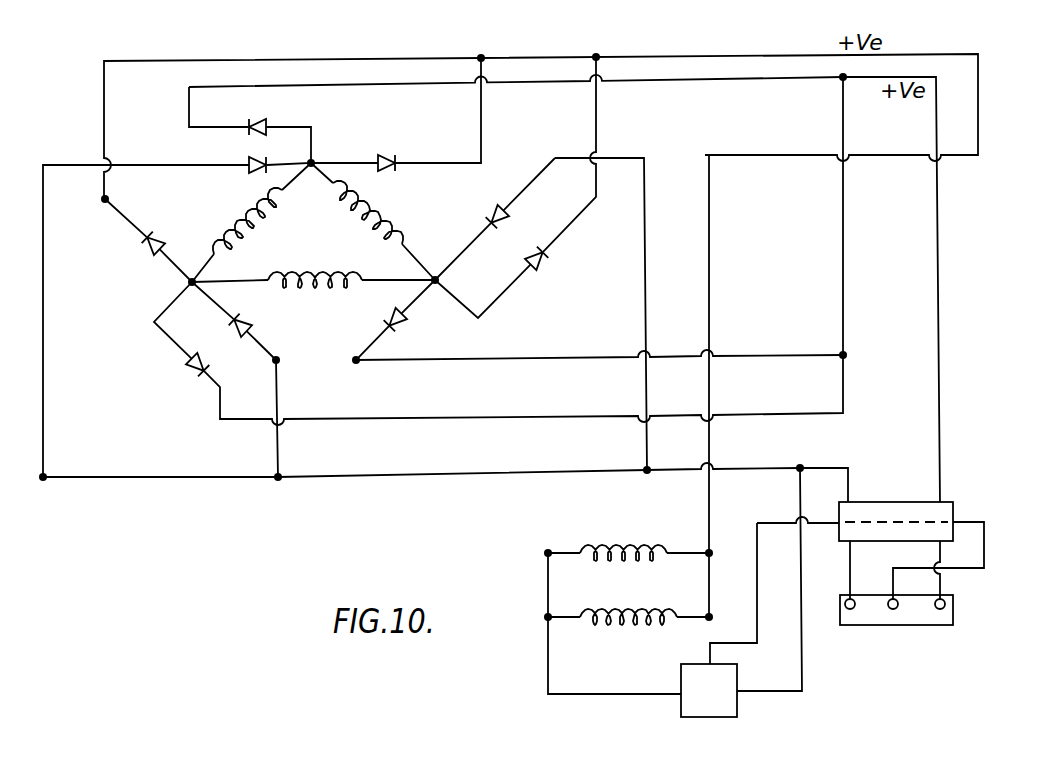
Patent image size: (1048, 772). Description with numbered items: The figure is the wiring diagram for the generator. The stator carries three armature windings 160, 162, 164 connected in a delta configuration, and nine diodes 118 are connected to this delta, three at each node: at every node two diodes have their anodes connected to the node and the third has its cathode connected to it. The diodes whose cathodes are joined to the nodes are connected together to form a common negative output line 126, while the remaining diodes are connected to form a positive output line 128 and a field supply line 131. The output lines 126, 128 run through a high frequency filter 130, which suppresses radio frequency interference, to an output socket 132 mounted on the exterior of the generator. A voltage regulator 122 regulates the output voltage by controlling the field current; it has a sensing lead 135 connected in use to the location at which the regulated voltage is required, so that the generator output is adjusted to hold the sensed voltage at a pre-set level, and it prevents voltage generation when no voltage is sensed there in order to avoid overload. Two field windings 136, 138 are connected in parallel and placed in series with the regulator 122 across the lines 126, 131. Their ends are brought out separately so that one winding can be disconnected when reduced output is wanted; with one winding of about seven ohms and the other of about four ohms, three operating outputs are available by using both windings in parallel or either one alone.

The diode 118 is at (355, 249).
The voltage regulator 122 is at (680, 674).
The common negative output line 126 is at (500, 473).
The positive output line 128 is at (790, 79).
The high frequency filter 130 is at (909, 501).
The field supply line 131 is at (905, 53).
The output socket 132 is at (903, 627).
The sensing lead 135 is at (836, 579).
The field winding 136 is at (617, 545).
The field winding 138 is at (640, 608).
The armature winding 160 is at (258, 225).
The armature winding 162 is at (392, 222).
The armature winding 164 is at (318, 256).